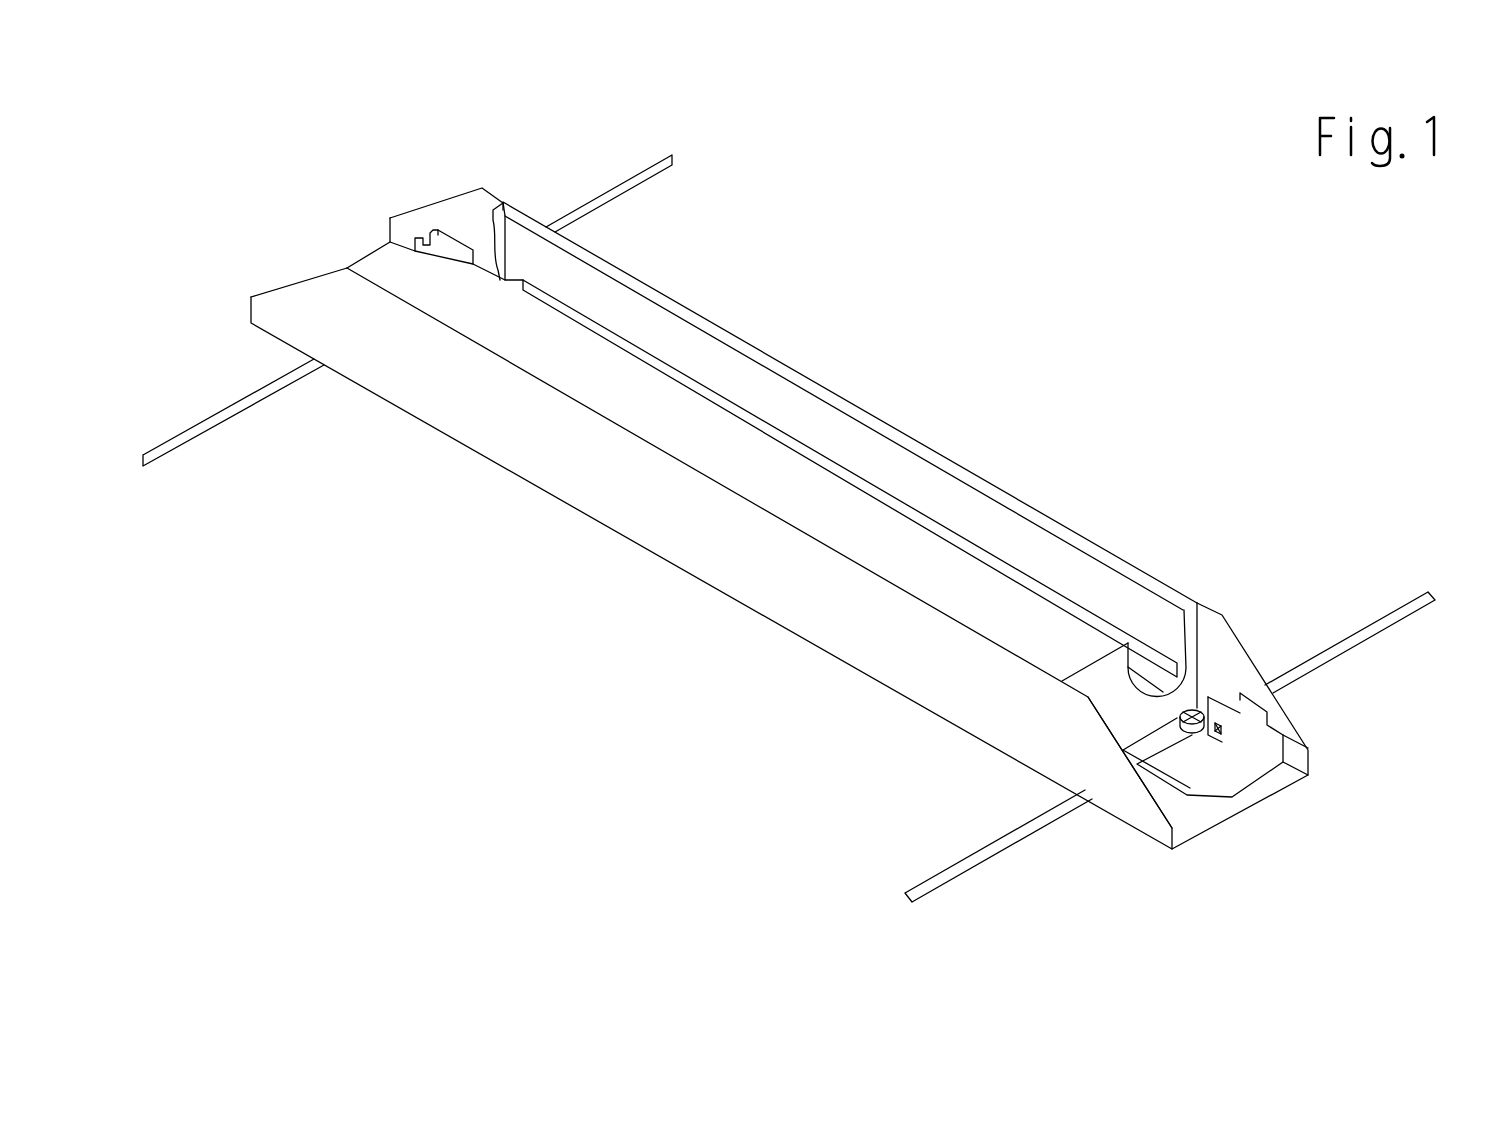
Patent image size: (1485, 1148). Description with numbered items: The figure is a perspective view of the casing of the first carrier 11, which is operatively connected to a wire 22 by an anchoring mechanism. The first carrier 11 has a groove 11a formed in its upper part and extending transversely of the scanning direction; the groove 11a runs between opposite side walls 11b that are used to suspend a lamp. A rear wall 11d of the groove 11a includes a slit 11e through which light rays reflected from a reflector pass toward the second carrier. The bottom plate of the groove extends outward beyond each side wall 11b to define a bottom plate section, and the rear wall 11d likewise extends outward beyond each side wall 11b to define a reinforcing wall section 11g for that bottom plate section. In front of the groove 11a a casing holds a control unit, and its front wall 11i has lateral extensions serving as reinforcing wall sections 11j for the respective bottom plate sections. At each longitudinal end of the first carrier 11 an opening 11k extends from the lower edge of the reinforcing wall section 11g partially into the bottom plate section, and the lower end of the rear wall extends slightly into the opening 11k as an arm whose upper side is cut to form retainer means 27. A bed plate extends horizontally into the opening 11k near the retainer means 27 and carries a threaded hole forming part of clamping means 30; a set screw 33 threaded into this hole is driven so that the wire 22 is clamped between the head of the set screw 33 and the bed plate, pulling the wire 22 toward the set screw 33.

The first carrier 11 is at (852, 522).
The groove 11a is at (844, 414).
The side walls 11b is at (1206, 574).
The rear wall 11d is at (845, 406).
The slit 11e is at (850, 478).
The reinforcing wall section 11g is at (864, 459).
The front wall 11i is at (711, 558).
The reinforcing wall sections 11j is at (711, 621).
The opening 11k is at (1368, 721).
The wire 22 is at (789, 528).
The retainer means 27 is at (1326, 740).
The clamping means 30 is at (1228, 827).
The set screw 33 is at (1304, 776).